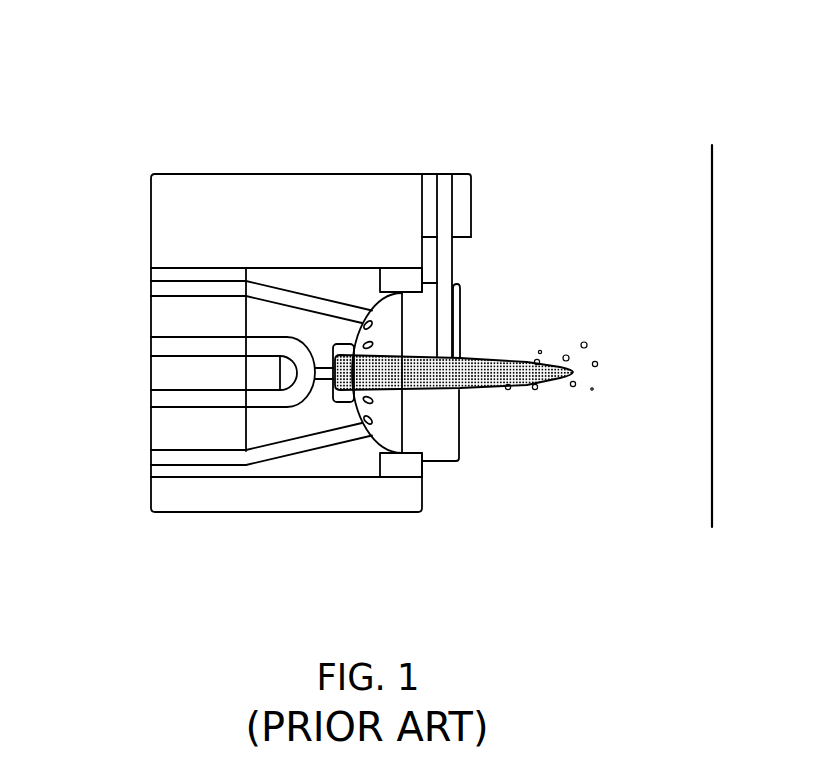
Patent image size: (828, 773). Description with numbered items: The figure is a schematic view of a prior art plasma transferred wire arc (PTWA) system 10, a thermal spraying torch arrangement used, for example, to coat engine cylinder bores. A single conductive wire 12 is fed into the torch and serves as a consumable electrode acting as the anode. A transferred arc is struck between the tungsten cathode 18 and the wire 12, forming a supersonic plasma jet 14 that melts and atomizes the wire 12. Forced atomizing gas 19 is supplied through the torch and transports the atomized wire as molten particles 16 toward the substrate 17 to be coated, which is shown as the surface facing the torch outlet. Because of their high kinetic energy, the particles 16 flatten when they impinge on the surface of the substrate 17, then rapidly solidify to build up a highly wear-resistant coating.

The PTWA system 10 is at (129, 70).
The conductive wire 12 is at (447, 253).
The plasma jet 14 is at (443, 375).
The molten particles 16 is at (520, 362).
The substrate 17 is at (712, 357).
The tungsten cathode 18 is at (160, 375).
The atomizing gas 19 is at (160, 288).